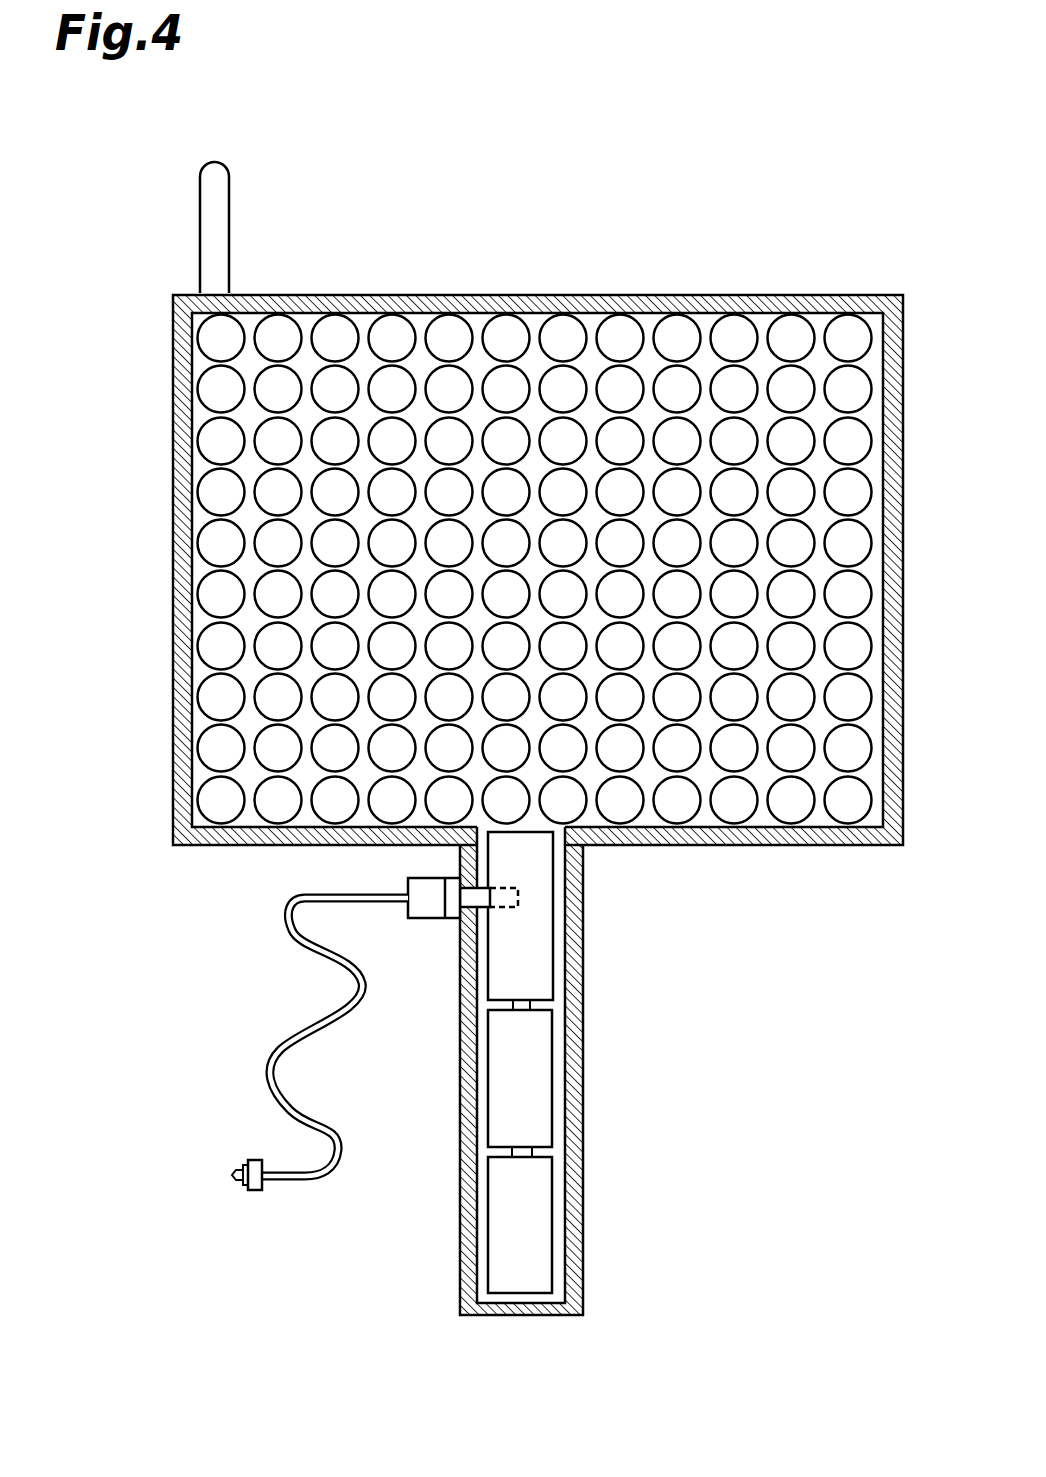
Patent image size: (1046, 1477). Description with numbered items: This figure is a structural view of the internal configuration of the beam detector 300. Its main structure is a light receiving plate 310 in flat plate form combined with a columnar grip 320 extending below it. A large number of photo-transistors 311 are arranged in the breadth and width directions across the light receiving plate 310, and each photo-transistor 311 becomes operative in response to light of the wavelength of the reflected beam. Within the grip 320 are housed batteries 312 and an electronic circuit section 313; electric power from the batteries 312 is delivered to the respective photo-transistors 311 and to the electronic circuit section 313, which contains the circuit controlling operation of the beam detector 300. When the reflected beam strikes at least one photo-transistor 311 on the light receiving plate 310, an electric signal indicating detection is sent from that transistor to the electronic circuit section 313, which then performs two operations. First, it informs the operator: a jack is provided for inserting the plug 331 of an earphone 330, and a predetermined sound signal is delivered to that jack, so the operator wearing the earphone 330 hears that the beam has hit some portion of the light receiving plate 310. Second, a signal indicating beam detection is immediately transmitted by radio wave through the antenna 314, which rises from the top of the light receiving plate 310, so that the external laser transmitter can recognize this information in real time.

The beam detector 300 is at (390, 125).
The light receiving plate 310 is at (660, 293).
The photo-transistor 311 is at (387, 338).
The battery 312 is at (523, 1072).
The electronic circuit section 313 is at (530, 867).
The antenna 314 is at (197, 243).
The grip 320 is at (583, 1297).
The earphone 330 is at (255, 1185).
The plug 331 is at (428, 903).